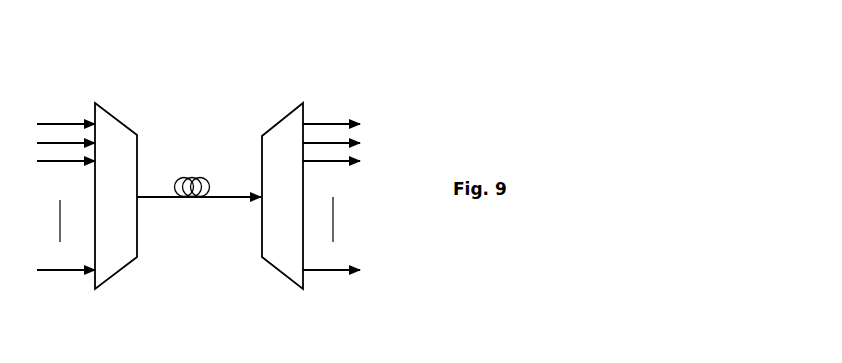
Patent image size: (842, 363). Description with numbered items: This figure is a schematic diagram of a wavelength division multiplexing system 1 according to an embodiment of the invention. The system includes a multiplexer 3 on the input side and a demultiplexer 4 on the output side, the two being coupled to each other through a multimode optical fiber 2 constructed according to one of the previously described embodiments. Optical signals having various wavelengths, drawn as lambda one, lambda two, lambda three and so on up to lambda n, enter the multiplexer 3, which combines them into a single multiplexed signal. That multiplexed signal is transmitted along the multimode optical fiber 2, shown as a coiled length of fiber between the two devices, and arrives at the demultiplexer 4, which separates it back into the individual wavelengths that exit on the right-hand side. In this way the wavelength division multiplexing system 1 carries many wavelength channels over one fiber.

The wavelength division multiplexing system 1 is at (282, 68).
The multimode optical fiber 2 is at (193, 178).
The multiplexer 3 is at (118, 273).
The demultiplexer 4 is at (281, 273).